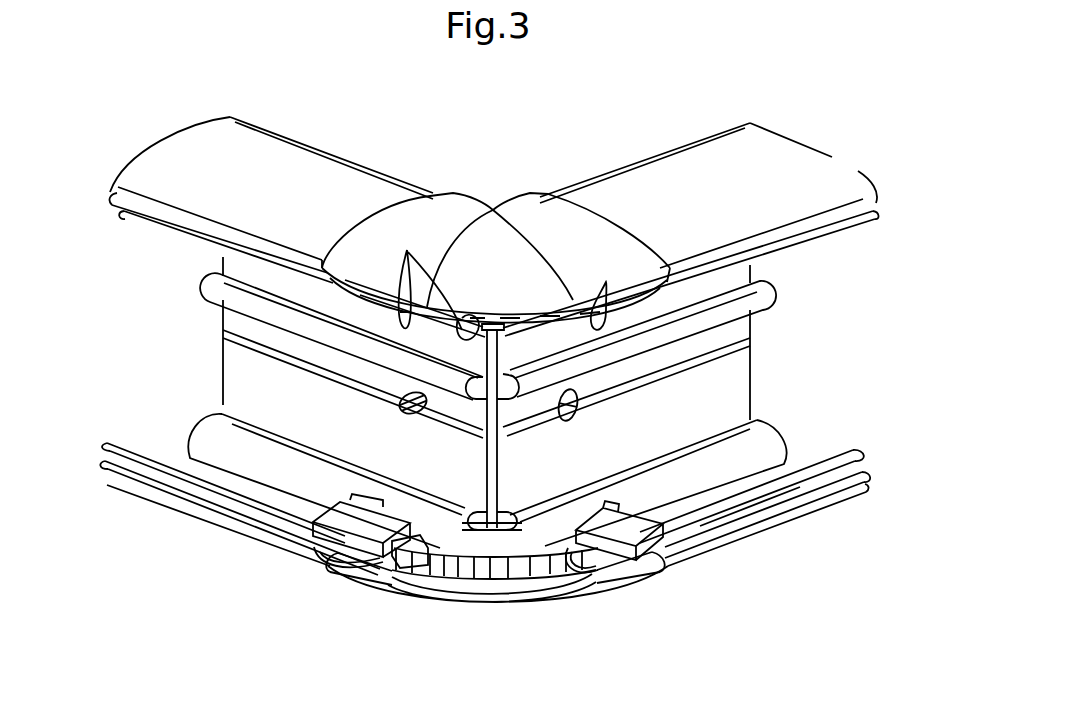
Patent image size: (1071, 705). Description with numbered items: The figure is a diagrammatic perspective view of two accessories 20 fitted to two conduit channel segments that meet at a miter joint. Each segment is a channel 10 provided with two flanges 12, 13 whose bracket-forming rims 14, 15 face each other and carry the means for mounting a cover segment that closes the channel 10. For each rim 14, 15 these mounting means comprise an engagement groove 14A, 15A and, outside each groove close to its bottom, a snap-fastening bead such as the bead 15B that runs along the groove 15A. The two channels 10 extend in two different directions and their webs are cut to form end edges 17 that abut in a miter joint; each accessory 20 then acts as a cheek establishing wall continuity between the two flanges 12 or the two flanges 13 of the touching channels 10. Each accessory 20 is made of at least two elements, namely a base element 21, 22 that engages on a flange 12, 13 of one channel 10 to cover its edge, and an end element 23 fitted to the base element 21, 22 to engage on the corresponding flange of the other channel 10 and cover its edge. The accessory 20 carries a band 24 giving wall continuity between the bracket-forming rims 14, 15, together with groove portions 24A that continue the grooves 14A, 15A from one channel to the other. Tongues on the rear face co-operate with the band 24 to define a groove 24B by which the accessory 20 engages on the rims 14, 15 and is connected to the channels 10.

The channel 10 is at (214, 368).
The flange 12 is at (196, 141).
The flange 13 is at (190, 457).
The bracket-forming rim 14 is at (108, 192).
The groove 14A is at (117, 208).
The bracket-forming rim 15 is at (130, 484).
The groove 15A is at (106, 463).
The snap-fastening bead 15B is at (120, 440).
The cut end edge 17 is at (487, 463).
The accessory 20 is at (484, 400).
The base element 21 is at (546, 262).
The base element 22 is at (440, 207).
The end element 23 is at (537, 200).
The band 24 is at (513, 312).
The groove portion 24A is at (507, 281).
The groove 24B is at (352, 566).